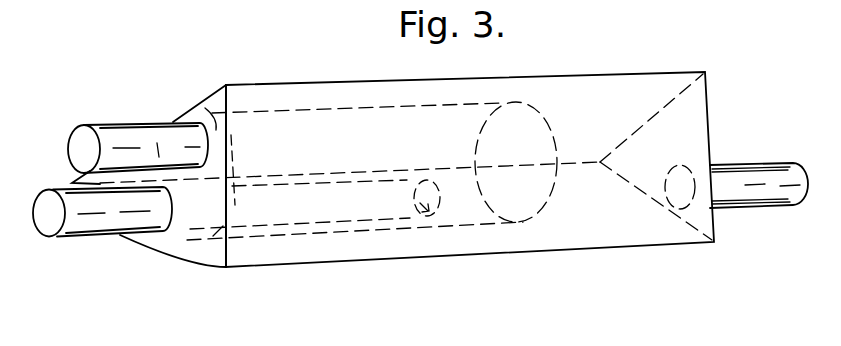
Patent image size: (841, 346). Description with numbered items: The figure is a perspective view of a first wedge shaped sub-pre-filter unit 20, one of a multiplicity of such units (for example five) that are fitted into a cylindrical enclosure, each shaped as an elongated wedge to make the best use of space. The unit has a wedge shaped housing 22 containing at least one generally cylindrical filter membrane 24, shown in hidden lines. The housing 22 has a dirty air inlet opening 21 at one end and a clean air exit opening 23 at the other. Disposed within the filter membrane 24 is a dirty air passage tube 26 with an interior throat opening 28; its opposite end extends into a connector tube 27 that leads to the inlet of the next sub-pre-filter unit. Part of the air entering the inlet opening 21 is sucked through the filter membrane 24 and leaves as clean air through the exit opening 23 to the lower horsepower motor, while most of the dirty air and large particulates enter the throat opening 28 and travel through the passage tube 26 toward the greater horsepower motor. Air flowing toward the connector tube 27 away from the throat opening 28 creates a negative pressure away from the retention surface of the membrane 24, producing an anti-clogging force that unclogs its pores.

The first wedge shaped sub-pre-filter unit 20 is at (258, 84).
The dirty air inlet opening 21 is at (168, 134).
The housing 22 is at (580, 250).
The clean air exit opening 23 is at (692, 162).
The filter membrane 24 is at (545, 118).
The dirty air passage tube 26 is at (345, 209).
The connector tube 27 is at (160, 211).
The throat opening 28 is at (445, 247).